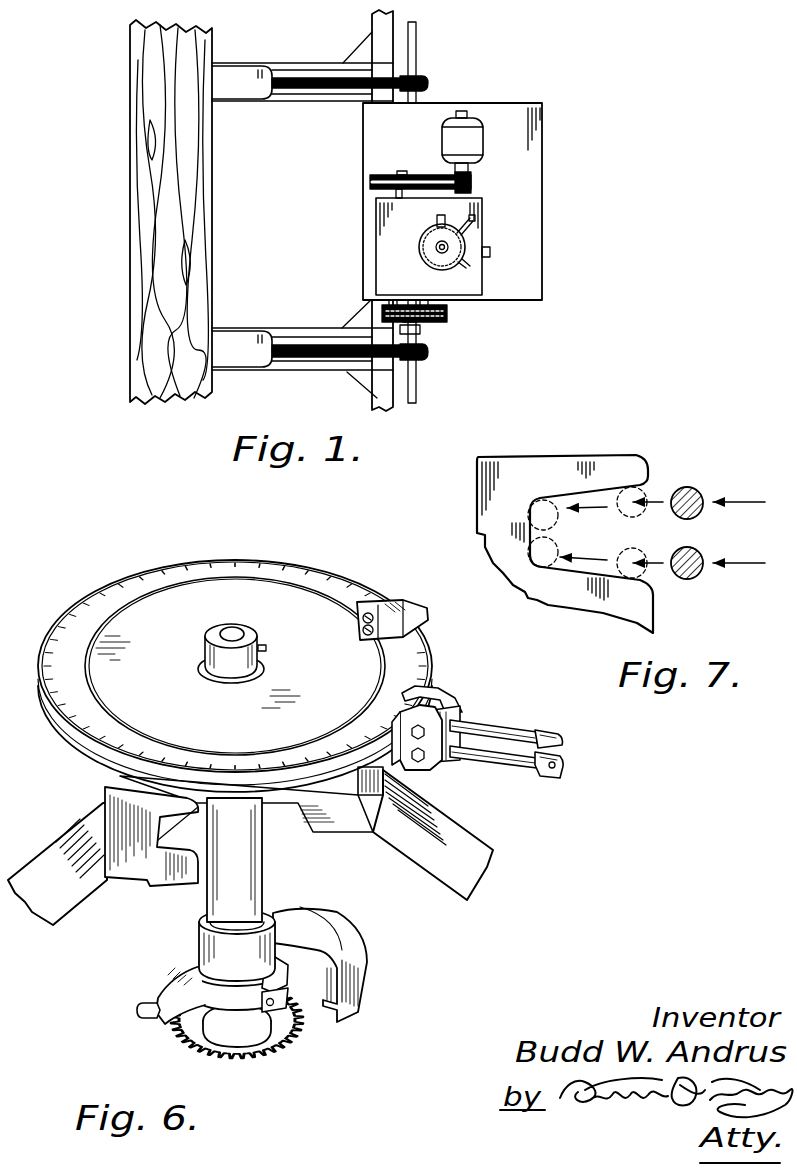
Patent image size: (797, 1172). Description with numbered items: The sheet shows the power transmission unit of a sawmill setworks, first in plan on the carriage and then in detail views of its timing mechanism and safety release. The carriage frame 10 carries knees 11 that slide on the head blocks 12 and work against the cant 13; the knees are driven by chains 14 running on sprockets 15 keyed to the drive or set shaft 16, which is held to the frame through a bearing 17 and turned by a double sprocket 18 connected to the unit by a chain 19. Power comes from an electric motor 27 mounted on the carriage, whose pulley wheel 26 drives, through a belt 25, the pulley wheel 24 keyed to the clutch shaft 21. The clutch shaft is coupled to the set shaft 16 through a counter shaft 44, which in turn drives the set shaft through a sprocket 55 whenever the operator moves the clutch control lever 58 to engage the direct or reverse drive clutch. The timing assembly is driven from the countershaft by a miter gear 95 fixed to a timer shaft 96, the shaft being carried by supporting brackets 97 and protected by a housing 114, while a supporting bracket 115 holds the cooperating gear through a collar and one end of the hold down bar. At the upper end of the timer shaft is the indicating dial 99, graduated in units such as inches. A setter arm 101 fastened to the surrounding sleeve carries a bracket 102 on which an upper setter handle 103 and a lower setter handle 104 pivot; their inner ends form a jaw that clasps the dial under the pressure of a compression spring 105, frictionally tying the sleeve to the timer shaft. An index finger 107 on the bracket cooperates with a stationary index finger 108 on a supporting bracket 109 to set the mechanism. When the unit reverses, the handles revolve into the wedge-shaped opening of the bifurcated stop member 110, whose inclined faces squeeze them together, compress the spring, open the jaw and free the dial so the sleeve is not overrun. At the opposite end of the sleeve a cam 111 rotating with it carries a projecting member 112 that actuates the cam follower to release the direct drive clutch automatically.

In FIG. 1, the frame of the sawmill carriage 10 is at (372, 25).
In FIG. 1, the knees 11 is at (248, 92).
In FIG. 1, the head blocks 12 is at (281, 101).
In FIG. 1, the cant 13 is at (132, 176).
In FIG. 1, the chains 14 is at (322, 90).
In FIG. 1, the sprockets 15 is at (429, 82).
In FIG. 1, the drive shaft 16 is at (414, 46).
In FIG. 1, the bearing 17 is at (421, 334).
In FIG. 1, the double sprocket 18 is at (422, 328).
In FIG. 1, the chain 19 is at (448, 320).
In FIG. 1, the clutch shaft 21 is at (380, 193).
In FIG. 1, the pulley wheel 24 is at (373, 175).
In FIG. 1, the belt 25 is at (456, 176).
In FIG. 1, the pulley wheel 26 is at (474, 178).
In FIG. 1, the electric motor 27 is at (484, 140).
In FIG. 1, the counter shaft 44 is at (438, 306).
In FIG. 1, the sprocket 55 is at (448, 308).
In FIG. 1, the clutch control lever 58 is at (492, 252).
In FIG. 6, the miter gear 95 is at (275, 1054).
In FIG. 6, the timer shaft 96 is at (248, 636).
In FIG. 6, the supporting brackets 97 is at (66, 838).
In FIG. 1, the indicating dial 99 is at (421, 257).
In FIG. 6, the indicating dial 99 is at (369, 590).
In FIG. 6, the setter arm 101 is at (407, 773).
In FIG. 6, the bracket 102 is at (457, 704).
In FIG. 1, the upper setter handle 103 is at (474, 218).
In FIG. 7, the upper setter handle 103 is at (700, 492).
In FIG. 6, the upper setter handle 103 is at (491, 729).
In FIG. 7, the lower setter handle 104 is at (700, 556).
In FIG. 6, the lower setter handle 104 is at (507, 767).
In FIG. 6, the compression spring 105 is at (565, 770).
In FIG. 6, the index finger 107 is at (440, 690).
In FIG. 6, the stationary index finger 108 is at (378, 642).
In FIG. 1, the supporting bracket 109 is at (436, 220).
In FIG. 6, the supporting bracket 109 is at (392, 602).
In FIG. 1, the bifurcated stop member 110 is at (468, 262).
In FIG. 7, the bifurcated stop member 110 is at (525, 462).
In FIG. 6, the bifurcated stop member 110 is at (163, 884).
In FIG. 6, the cam 111 is at (167, 974).
In FIG. 6, the projecting member 112 is at (143, 1003).
In FIG. 6, the housing 114 is at (257, 842).
In FIG. 6, the supporting bracket 115 is at (352, 954).